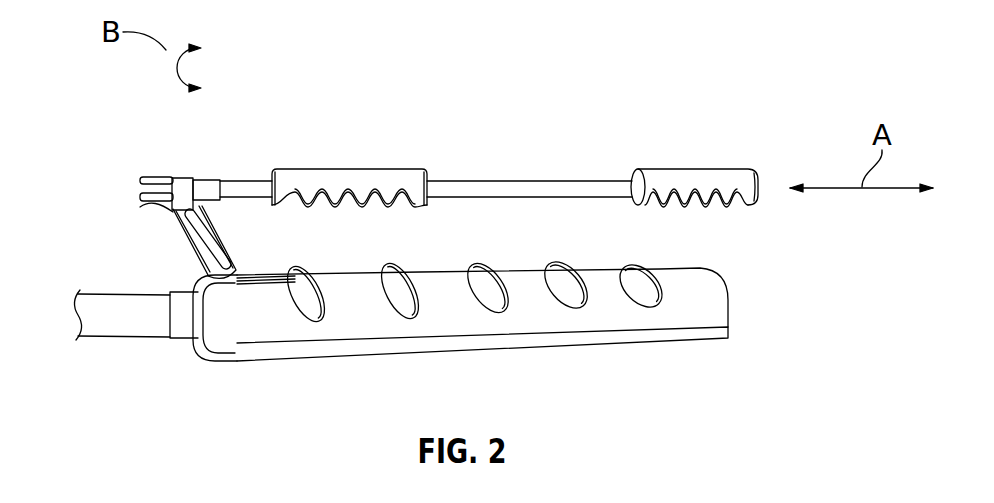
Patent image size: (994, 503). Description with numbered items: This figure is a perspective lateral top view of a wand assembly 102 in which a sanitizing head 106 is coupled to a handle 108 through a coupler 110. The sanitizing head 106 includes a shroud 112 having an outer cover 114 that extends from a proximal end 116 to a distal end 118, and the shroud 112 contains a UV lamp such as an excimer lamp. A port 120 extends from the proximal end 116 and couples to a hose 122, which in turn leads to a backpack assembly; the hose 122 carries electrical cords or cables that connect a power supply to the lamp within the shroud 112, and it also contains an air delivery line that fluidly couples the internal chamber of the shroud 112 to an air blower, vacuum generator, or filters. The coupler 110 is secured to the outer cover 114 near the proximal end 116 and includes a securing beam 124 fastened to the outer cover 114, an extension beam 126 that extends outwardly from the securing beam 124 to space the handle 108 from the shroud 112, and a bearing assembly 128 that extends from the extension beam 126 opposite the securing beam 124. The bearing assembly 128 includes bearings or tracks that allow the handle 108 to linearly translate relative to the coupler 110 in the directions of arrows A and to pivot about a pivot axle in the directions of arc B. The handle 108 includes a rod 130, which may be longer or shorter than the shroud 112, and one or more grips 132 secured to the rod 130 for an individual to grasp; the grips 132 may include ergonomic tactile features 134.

The wand assembly 102 is at (116, 130).
The sanitizing head 106 is at (725, 298).
The handle 108 is at (462, 178).
The coupler 110 is at (187, 233).
The shroud 112 is at (625, 312).
The outer cover 114 is at (687, 283).
The proximal end 116 is at (210, 343).
The distal end 118 is at (730, 327).
The port 120 is at (192, 325).
The hose 122 is at (112, 312).
The securing beam 124 is at (262, 274).
The extension beam 126 is at (232, 242).
The bearing assembly 128 is at (148, 206).
The rod 130 is at (183, 195).
The grips 132 is at (350, 168).
The ergonomic tactile features 134 is at (387, 207).